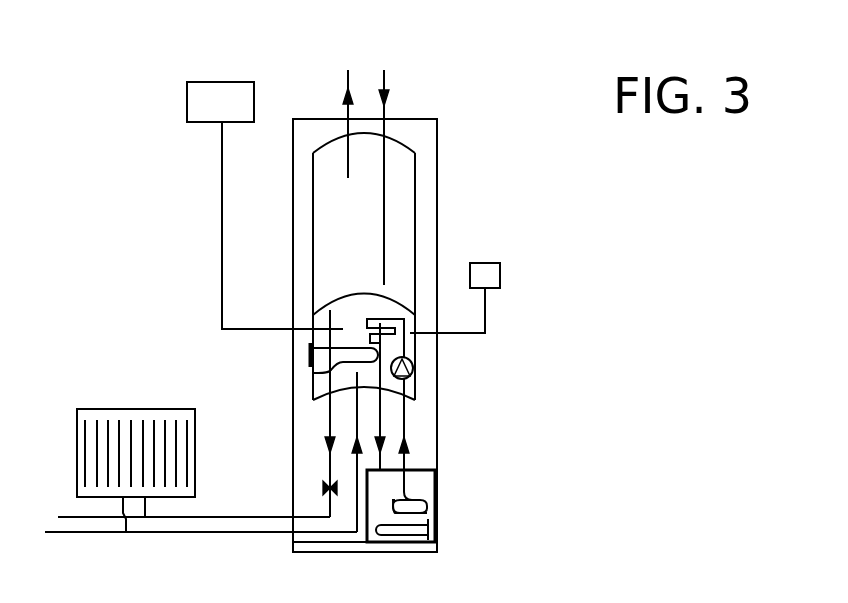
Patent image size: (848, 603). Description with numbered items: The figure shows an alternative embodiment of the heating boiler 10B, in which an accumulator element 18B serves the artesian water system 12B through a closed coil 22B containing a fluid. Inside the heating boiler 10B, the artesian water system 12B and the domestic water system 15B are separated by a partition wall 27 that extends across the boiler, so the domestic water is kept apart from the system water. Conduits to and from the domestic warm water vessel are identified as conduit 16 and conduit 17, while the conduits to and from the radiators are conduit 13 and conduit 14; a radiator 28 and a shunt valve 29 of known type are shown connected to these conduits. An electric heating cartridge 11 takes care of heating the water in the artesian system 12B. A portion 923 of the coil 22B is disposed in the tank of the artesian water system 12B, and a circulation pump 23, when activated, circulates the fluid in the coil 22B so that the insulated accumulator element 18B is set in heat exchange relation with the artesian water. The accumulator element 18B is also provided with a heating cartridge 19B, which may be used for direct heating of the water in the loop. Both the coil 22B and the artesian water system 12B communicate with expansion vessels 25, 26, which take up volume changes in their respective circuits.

The heating boiler 10B is at (437, 218).
The domestic water system 15B is at (397, 190).
The partition wall 27 is at (403, 293).
The conduit from the warm water vessel 17 is at (346, 108).
The conduit to the warm water vessel 16 is at (387, 82).
The expansion vessel 26 is at (212, 92).
The expansion vessel 25 is at (488, 277).
The portion of coil 923 is at (383, 313).
The circulation pump 23 is at (413, 366).
The electric heating cartridge 11 is at (313, 373).
The artesian water system 12B is at (342, 330).
The conduit to the radiators 13 is at (330, 422).
The conduit from the radiators 14 is at (357, 418).
The coil 22B is at (410, 417).
The accumulator element 18B is at (432, 498).
The heating cartridge 19B is at (410, 528).
The radiator 28 is at (135, 422).
The shunt valve 29 is at (324, 488).